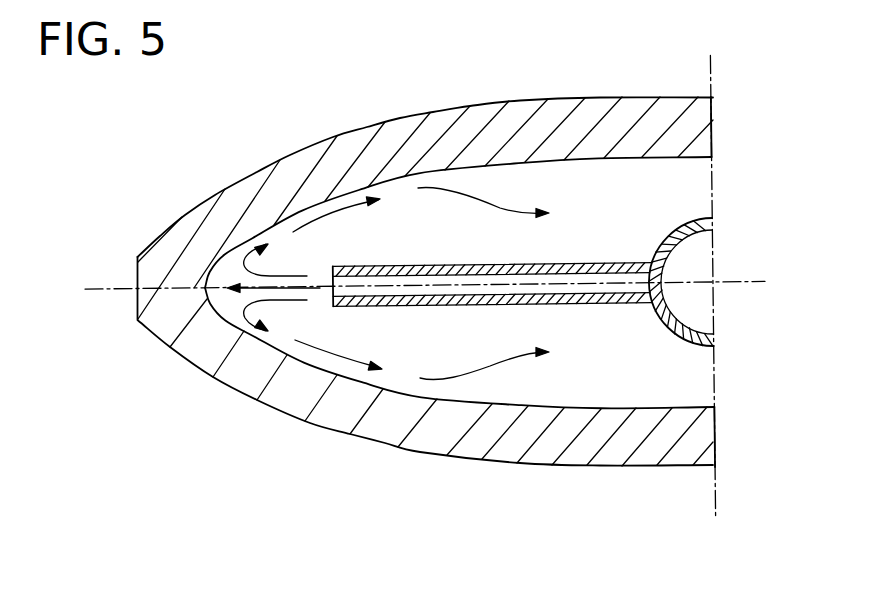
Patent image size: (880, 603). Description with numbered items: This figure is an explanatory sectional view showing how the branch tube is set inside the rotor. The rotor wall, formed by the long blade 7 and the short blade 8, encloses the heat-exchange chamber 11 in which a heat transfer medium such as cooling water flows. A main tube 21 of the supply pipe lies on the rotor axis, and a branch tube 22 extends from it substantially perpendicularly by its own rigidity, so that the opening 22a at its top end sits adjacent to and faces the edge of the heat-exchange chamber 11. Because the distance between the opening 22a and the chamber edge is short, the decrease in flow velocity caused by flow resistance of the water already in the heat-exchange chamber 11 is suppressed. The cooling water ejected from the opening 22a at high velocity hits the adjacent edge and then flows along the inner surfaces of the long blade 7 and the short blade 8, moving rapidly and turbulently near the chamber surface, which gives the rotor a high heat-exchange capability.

The long blade 7 is at (427, 299).
The short blade 8 is at (241, 406).
The heat-exchange chamber 11 is at (595, 370).
The main tube 21 is at (672, 333).
The branch tube 22 is at (470, 303).
The opening 22a is at (318, 293).